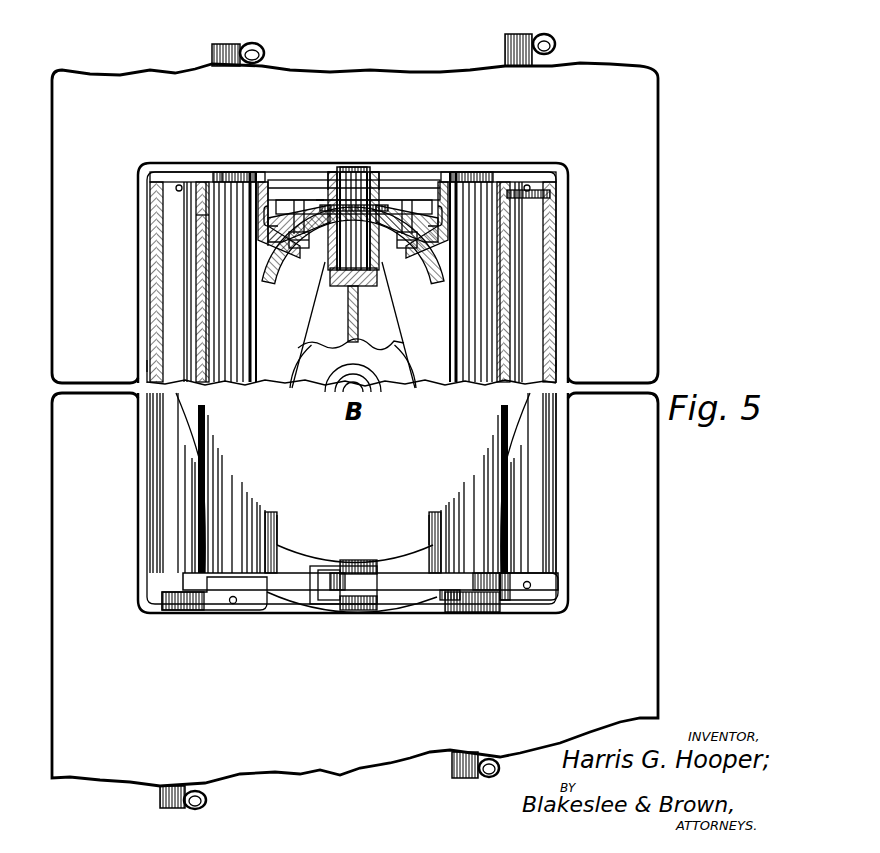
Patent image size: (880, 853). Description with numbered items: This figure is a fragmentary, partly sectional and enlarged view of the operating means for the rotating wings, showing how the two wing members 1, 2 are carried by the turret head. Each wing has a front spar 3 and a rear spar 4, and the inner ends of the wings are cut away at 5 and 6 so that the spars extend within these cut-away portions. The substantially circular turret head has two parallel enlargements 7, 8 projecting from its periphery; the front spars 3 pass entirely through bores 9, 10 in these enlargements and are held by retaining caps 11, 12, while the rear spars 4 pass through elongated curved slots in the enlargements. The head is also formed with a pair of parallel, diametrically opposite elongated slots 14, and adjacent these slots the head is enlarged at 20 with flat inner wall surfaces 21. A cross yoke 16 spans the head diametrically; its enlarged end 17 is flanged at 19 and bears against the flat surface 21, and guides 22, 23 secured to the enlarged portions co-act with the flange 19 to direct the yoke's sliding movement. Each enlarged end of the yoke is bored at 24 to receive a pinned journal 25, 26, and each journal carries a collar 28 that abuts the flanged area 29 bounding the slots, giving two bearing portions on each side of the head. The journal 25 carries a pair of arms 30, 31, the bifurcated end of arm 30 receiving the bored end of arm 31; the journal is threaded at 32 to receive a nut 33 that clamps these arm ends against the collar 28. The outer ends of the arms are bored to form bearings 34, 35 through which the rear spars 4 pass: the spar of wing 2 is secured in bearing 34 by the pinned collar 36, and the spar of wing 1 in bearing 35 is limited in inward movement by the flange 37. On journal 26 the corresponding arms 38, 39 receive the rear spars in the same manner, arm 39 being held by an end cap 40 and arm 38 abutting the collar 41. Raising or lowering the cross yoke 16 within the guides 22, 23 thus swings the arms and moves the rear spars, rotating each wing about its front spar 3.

The wing member 1 is at (650, 113).
The wing member 2 is at (642, 518).
The front spar 3 is at (550, 42).
The rear spar 4 is at (215, 47).
The cut-away portion 5 is at (568, 177).
The cut-away portion 6 is at (570, 483).
The enlargement 7 is at (147, 367).
The enlargement 8 is at (560, 365).
The bore 9 is at (150, 274).
The bore 10 is at (549, 243).
The retaining cap 11 is at (560, 585).
The retaining cap 12 is at (148, 176).
The elongated slot 14 is at (195, 213).
The cross yoke 16 is at (375, 347).
The enlarged end 17 is at (389, 226).
The flange 19 is at (304, 188).
The enlarged portion 20 is at (398, 237).
The flat inner wall surface 21 is at (330, 248).
The guide 22 is at (292, 222).
The guide 23 is at (412, 250).
The opening 24 is at (380, 265).
The journal 25 is at (360, 190).
The journal 26 is at (357, 610).
The collar 28 is at (388, 210).
The flanged area 29 is at (324, 222).
The arm 30 is at (458, 220).
The arm 31 is at (297, 188).
The screw-threaded portion 32 is at (350, 180).
The nut 33 is at (370, 203).
The bearing 34 is at (517, 181).
The bearing 35 is at (208, 178).
The collar 36 is at (508, 187).
The flange or collar 37 is at (222, 178).
The arm 38 is at (413, 585).
The arm 39 is at (293, 584).
The end cap 40 is at (246, 612).
The collar or flange 41 is at (448, 605).